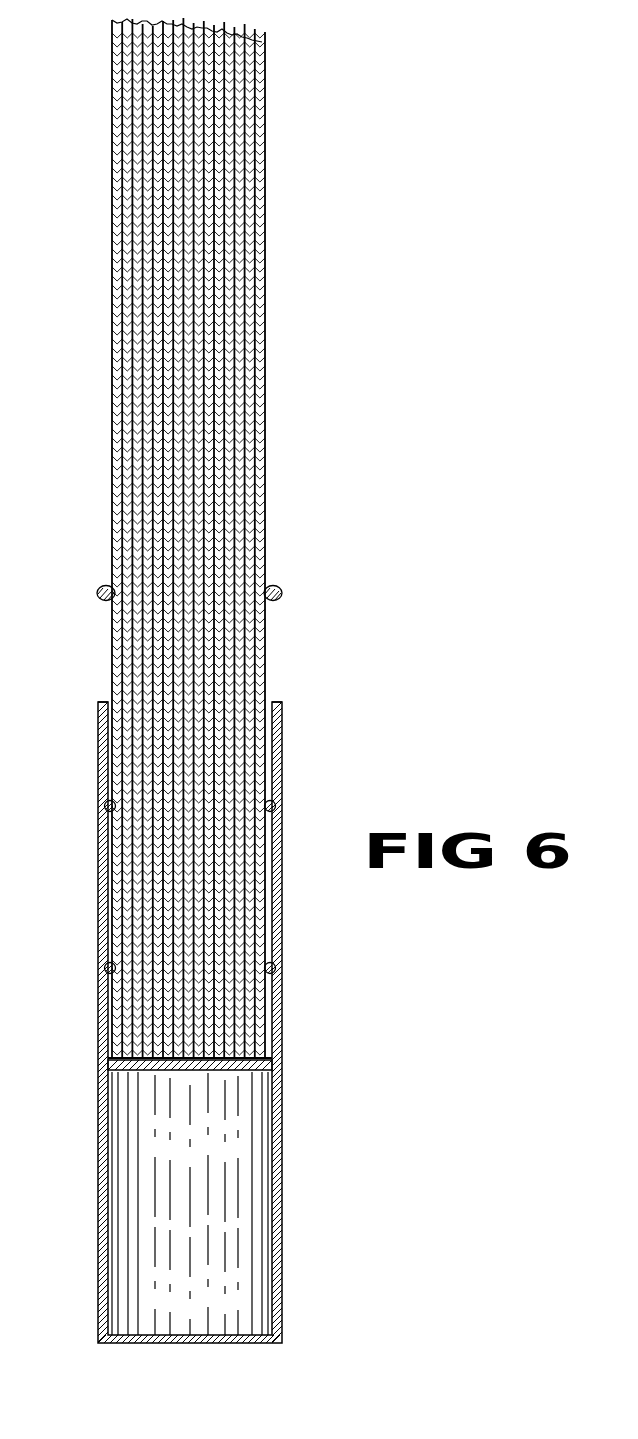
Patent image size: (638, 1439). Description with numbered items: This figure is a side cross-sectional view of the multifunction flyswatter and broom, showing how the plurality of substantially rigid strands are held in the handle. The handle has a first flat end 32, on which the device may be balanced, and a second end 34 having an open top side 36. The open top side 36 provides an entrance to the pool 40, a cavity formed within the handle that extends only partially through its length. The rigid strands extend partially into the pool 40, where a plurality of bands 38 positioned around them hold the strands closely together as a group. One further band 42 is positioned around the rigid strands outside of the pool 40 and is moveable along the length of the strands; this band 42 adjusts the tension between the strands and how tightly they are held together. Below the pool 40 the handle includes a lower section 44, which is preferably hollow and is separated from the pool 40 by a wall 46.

The first flat end 32 is at (282, 1302).
The second end 34 is at (282, 746).
The open top side 36 is at (270, 702).
The bands 38 is at (277, 807).
The pool 40 is at (110, 708).
The band 42 is at (282, 588).
The lower section 44 is at (283, 1194).
The wall 46 is at (247, 1066).